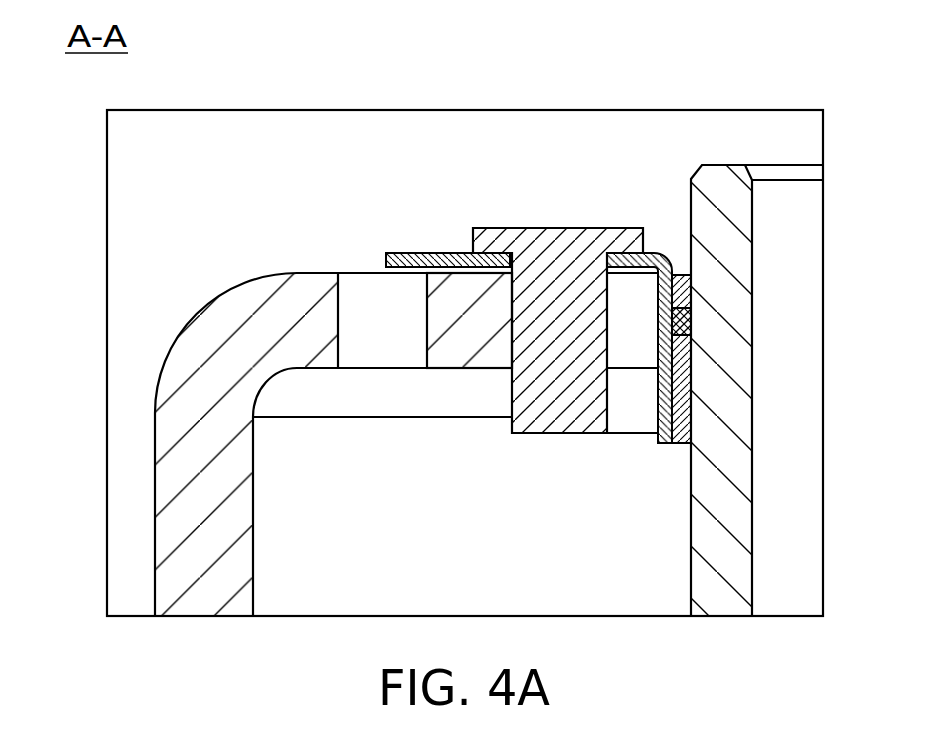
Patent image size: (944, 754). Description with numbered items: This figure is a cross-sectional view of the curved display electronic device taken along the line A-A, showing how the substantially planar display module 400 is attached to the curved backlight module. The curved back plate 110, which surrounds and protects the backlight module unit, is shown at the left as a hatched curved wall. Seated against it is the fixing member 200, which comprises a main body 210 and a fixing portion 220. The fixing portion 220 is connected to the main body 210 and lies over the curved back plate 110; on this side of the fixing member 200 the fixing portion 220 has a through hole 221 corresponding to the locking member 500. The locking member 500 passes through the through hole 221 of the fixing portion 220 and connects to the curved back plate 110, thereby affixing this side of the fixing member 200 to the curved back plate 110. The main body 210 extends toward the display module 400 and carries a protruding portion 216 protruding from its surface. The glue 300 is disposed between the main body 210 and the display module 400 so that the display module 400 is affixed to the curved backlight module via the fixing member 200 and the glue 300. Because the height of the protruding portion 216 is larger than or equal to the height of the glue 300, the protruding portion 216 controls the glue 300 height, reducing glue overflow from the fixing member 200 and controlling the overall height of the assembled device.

The curved back plate 110 is at (183, 525).
The fixing member 200 is at (665, 443).
The main body 210 is at (667, 362).
The protruding portion 216 is at (692, 319).
The fixing portion 220 is at (422, 253).
The through hole 221 is at (610, 250).
The glue 300 is at (685, 413).
The display module 400 is at (735, 262).
The locking member 500 is at (562, 248).